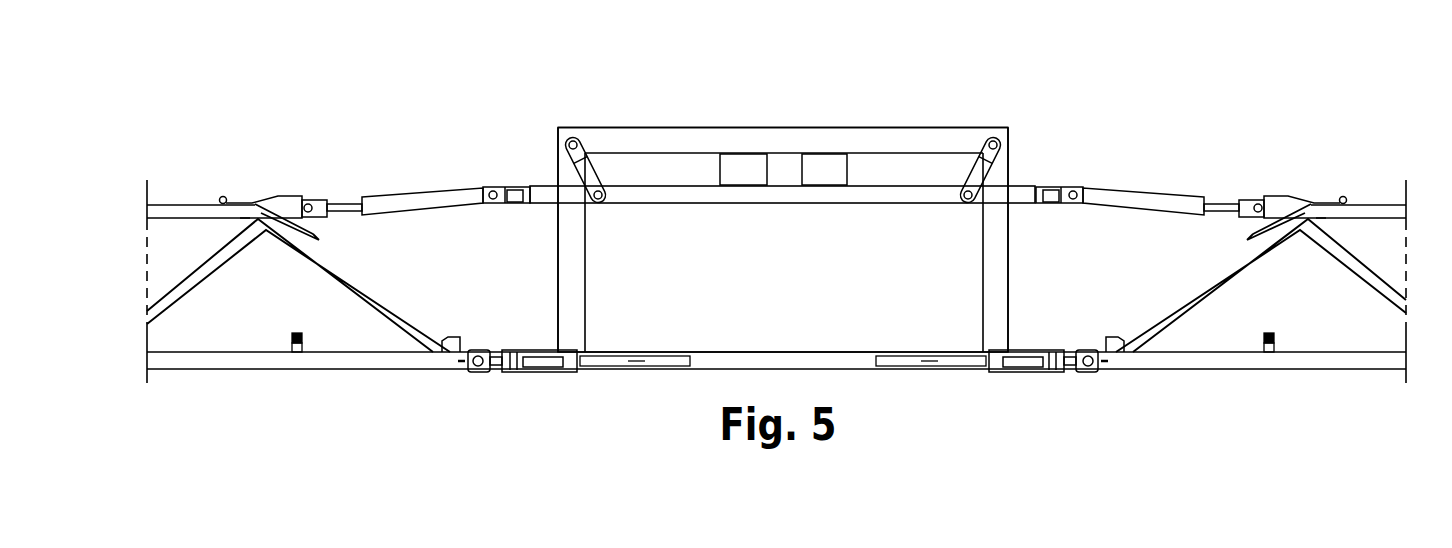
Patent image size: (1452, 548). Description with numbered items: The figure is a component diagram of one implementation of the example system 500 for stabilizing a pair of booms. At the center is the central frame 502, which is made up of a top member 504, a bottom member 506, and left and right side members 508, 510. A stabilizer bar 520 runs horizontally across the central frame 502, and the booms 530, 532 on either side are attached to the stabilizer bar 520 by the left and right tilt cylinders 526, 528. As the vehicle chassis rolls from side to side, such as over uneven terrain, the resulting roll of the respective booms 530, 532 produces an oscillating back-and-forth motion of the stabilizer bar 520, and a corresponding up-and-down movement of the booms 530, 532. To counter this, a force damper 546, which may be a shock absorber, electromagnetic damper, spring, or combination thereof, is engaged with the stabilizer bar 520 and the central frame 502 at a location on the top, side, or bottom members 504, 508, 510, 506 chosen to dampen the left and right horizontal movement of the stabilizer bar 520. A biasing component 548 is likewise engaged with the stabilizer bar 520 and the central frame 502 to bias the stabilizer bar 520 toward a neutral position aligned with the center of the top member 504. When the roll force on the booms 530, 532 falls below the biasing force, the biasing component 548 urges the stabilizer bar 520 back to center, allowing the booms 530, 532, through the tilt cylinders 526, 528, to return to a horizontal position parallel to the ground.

The example system 500 is at (1048, 82).
The central frame 502 is at (698, 118).
The top member 504 is at (820, 127).
The bottom member 506 is at (765, 352).
The side member 508 is at (578, 322).
The side member 510 is at (996, 328).
The stabilizer bar 520 is at (895, 198).
The left tilt cylinder 526 is at (416, 192).
The right tilt cylinder 528 is at (1136, 192).
The boom 530 is at (212, 174).
The boom 532 is at (1362, 185).
The force damper 546 is at (744, 172).
The biasing component 548 is at (838, 170).